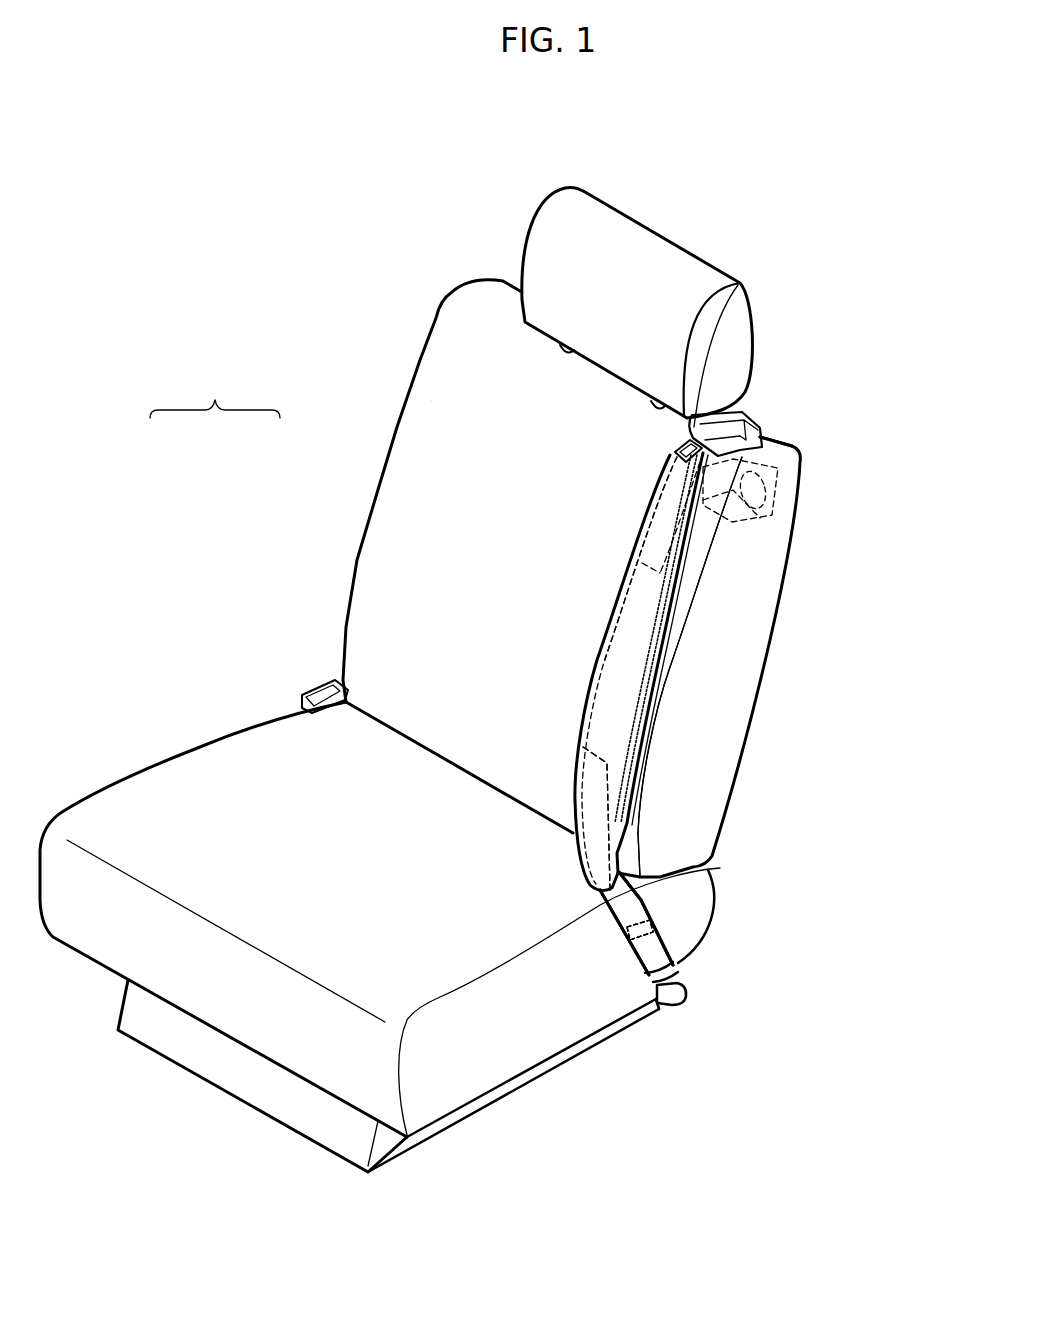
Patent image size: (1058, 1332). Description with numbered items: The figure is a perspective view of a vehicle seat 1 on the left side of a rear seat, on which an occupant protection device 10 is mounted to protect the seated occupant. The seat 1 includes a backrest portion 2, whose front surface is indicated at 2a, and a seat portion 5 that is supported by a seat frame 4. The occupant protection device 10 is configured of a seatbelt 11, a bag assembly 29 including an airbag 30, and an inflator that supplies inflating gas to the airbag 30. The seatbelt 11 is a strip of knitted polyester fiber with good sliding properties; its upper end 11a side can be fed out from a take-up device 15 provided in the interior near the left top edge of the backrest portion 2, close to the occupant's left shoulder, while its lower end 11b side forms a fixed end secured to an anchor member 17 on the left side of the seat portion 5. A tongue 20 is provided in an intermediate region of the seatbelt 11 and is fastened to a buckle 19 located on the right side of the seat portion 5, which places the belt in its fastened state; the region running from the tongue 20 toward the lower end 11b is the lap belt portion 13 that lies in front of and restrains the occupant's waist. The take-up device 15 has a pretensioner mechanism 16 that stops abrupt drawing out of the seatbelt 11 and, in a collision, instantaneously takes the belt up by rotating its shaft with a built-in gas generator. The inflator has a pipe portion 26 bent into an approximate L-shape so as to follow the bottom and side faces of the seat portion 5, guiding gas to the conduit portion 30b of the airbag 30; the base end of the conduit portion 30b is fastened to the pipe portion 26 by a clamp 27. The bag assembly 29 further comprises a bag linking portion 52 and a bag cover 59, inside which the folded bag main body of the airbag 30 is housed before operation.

The seat 1 is at (215, 393).
The backrest portion 2 is at (355, 482).
The seat back front surface 2a is at (485, 457).
The seat frame 4 is at (470, 1120).
The seat portion 5 is at (196, 715).
The occupant protection device 10 is at (684, 1067).
The seatbelt 11 is at (596, 818).
The upper end 11a is at (762, 400).
The lower end 11b is at (655, 927).
The lap belt portion 13 is at (607, 763).
The take-up device 15 is at (787, 472).
The pretensioner mechanism 16 is at (760, 487).
The anchor member 17 is at (640, 930).
The buckle 19 is at (311, 682).
The tongue 20 is at (695, 422).
The pipe portion 26 is at (683, 1000).
The clamp 27 is at (678, 967).
The bag assembly 29 is at (657, 560).
The airbag 30 is at (636, 923).
The conduit portion 30b is at (637, 910).
The bag linking portion 52 is at (628, 648).
The bag cover 59 is at (585, 707).